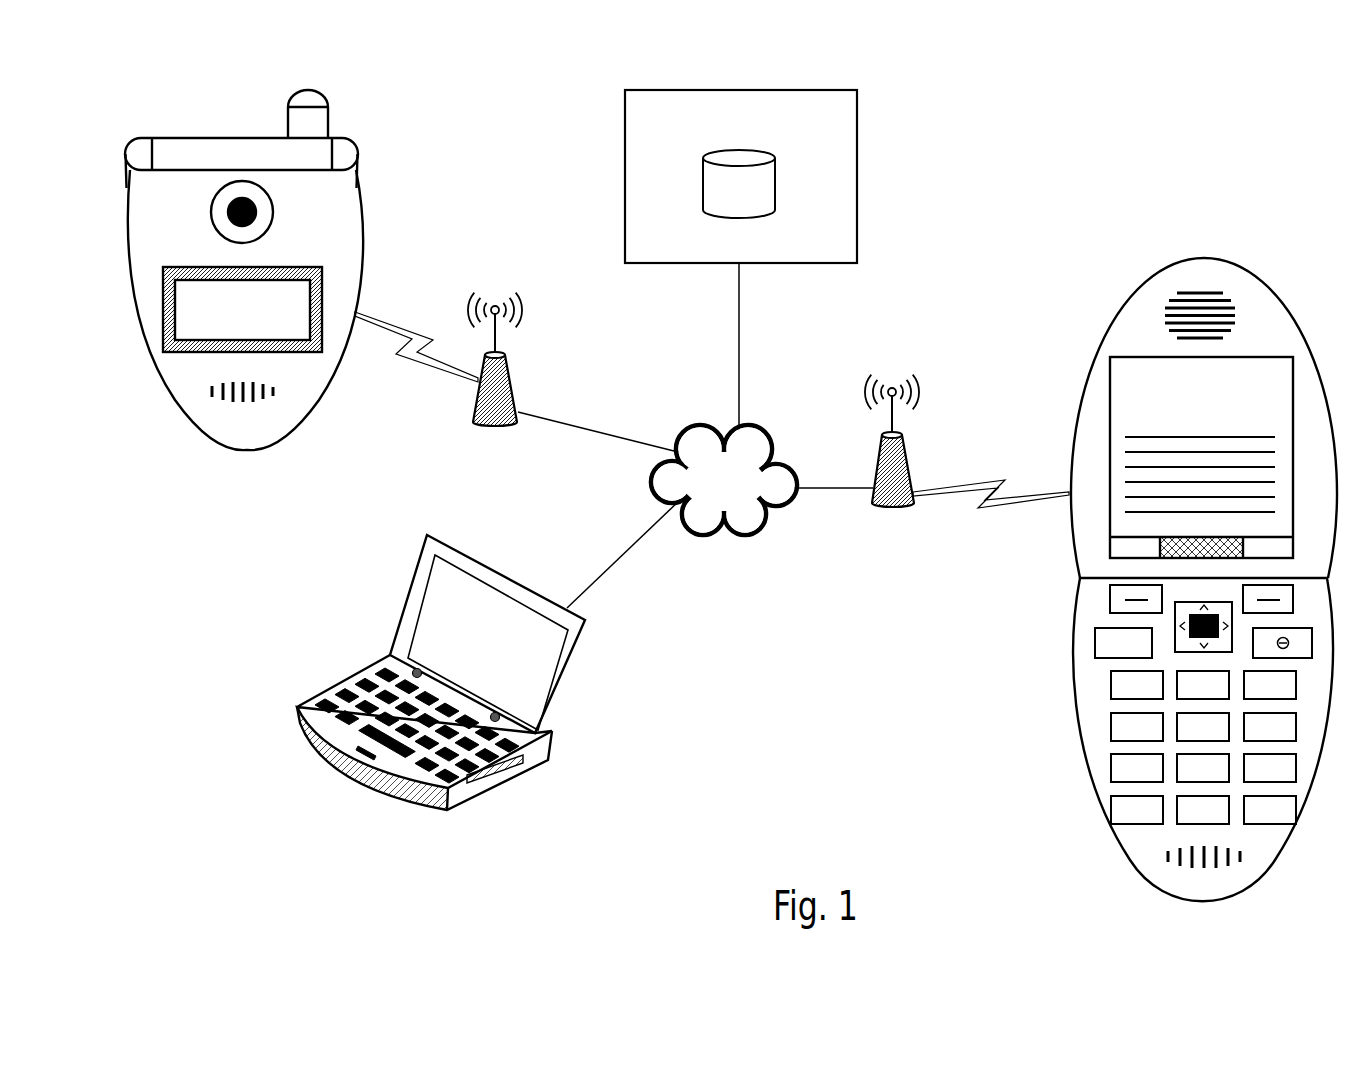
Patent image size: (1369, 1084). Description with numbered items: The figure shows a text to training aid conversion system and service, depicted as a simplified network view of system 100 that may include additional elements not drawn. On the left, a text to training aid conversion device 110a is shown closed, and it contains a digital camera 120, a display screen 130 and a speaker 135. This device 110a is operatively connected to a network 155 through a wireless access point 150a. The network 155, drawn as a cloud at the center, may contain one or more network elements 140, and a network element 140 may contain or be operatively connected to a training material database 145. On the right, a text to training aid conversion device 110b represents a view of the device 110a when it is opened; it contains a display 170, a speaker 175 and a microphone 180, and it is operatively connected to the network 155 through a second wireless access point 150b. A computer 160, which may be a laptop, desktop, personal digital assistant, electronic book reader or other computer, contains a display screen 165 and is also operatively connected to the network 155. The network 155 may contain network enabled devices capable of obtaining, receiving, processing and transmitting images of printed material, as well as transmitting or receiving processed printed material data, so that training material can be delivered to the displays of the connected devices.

The system 100 is at (1027, 90).
The text to training aid conversion device 110a is at (213, 270).
The text to training aid conversion device 110b is at (1158, 579).
The digital camera 120 is at (211, 212).
The display screen 130 is at (163, 312).
The speaker 135 is at (282, 394).
The network element 140 is at (791, 176).
The training material database 145 is at (775, 182).
The wireless access point 150a is at (497, 428).
The wireless access point 150b is at (900, 505).
The network 155 is at (748, 535).
The computer 160 is at (469, 706).
The display screen 165 is at (563, 697).
The display 170 is at (1110, 388).
The speaker 175 is at (1160, 311).
The microphone 180 is at (1160, 860).